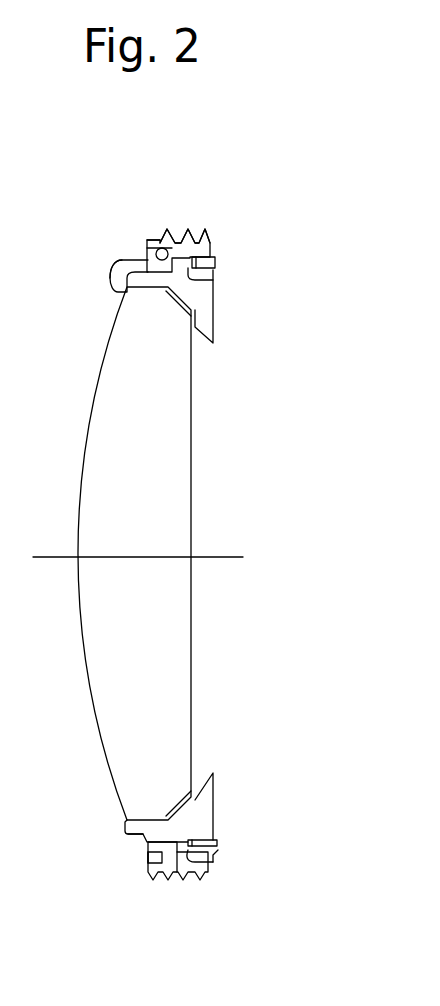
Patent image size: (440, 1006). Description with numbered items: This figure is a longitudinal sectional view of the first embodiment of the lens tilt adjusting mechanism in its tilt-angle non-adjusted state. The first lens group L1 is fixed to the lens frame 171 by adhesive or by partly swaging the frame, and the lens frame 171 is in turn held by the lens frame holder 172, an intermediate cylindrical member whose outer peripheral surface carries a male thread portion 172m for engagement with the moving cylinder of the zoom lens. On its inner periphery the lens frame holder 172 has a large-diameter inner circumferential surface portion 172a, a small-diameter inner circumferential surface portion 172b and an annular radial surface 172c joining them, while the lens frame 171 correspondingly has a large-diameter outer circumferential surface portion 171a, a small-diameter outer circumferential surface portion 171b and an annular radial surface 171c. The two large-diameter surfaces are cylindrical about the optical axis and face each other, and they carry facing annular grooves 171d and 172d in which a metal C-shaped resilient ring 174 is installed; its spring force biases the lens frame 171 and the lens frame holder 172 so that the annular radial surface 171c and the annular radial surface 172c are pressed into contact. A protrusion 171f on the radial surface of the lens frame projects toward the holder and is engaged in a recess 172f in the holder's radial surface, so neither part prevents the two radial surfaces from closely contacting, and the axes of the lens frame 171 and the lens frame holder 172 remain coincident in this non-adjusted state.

The first lens group L1 is at (162, 661).
The lens frame 171 is at (219, 306).
The large-diameter outer circumferential surface portion 171a is at (174, 872).
The small-diameter outer circumferential surface portion 171b is at (218, 843).
The annular radial surface 171c is at (215, 862).
The annular groove 171d is at (110, 283).
The protrusion 171f is at (215, 265).
The lens frame holder 172 is at (210, 232).
The large-diameter inner circumferential surface portion 172a is at (150, 860).
The small-diameter inner circumferential surface portion 172b is at (207, 840).
The annular radial surface 172c is at (168, 820).
The annular groove 172d is at (165, 239).
The recess 172f is at (213, 280).
The male thread portion 172m is at (172, 237).
The C-shaped resilient ring 174 is at (158, 251).